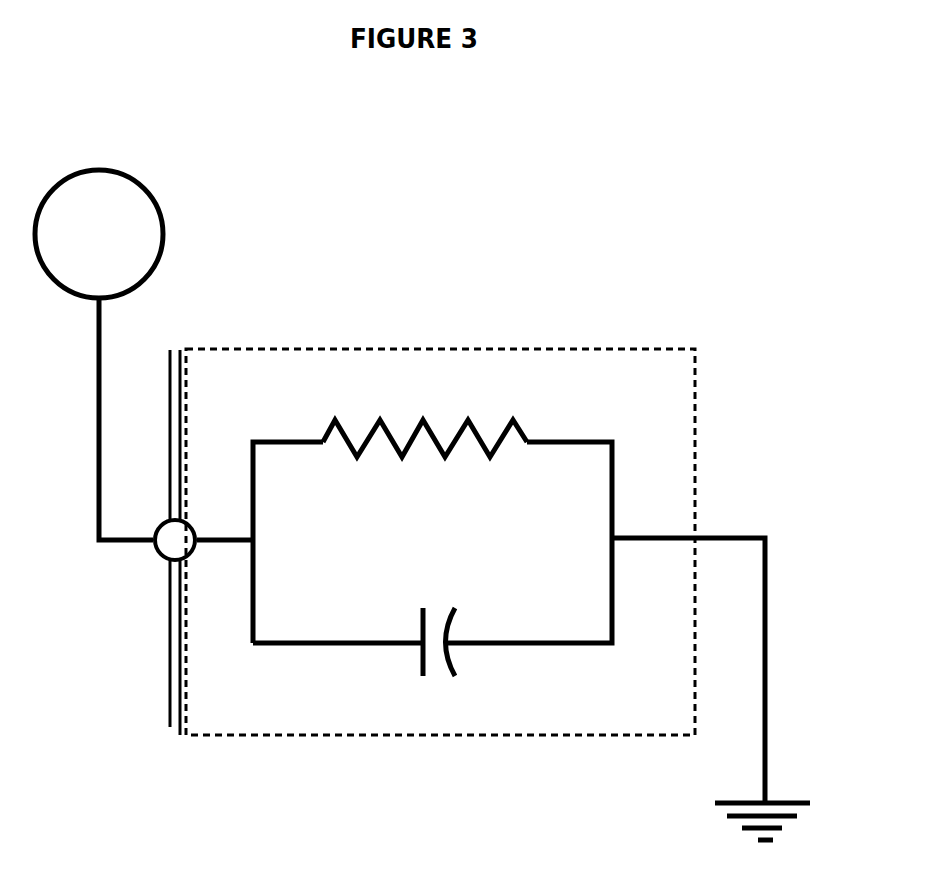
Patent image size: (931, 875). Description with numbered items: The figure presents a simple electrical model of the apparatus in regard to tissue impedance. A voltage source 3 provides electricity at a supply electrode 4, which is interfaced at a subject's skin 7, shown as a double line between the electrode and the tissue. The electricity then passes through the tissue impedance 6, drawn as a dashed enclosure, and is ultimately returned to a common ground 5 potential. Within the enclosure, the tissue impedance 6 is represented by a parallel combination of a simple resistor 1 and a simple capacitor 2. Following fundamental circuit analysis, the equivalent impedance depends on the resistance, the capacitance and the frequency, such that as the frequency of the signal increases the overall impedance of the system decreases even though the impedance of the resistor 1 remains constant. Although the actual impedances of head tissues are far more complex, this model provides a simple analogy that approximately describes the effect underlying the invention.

The resistor 1 is at (490, 418).
The capacitor 2 is at (478, 607).
The voltage source 3 is at (178, 233).
The supply electrode 4 is at (155, 558).
The common ground 5 is at (795, 778).
The tissue impedance 6 is at (292, 757).
The subject's skin 7 is at (160, 637).